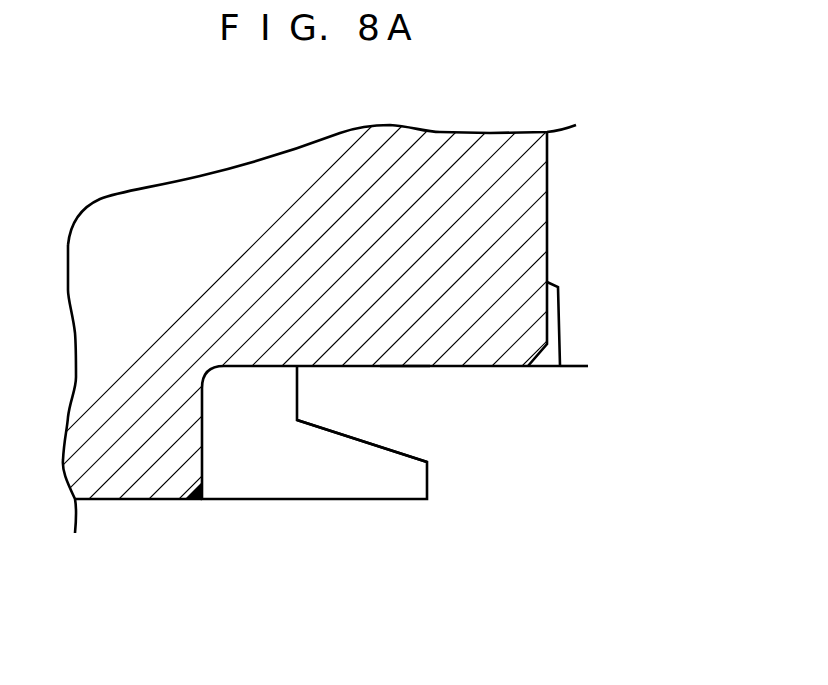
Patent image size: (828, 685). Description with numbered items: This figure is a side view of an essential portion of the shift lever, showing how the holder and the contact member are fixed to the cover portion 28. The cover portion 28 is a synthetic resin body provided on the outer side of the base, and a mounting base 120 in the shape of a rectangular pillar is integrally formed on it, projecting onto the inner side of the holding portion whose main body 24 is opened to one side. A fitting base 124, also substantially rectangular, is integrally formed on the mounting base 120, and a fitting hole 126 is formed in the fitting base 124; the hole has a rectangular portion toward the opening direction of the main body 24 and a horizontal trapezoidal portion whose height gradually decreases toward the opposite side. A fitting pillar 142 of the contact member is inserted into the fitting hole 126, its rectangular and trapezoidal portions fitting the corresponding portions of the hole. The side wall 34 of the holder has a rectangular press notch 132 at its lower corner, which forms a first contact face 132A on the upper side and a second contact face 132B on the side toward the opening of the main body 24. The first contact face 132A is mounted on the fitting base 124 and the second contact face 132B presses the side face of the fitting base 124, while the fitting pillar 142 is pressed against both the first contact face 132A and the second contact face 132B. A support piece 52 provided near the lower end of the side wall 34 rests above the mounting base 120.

The side wall 34 is at (548, 150).
The main body 24 is at (542, 214).
The cover portion 28 is at (574, 367).
The press notch 132 is at (522, 367).
The first contact face 132A is at (474, 367).
The second contact face 132B is at (203, 468).
The fitting base 124 is at (394, 358).
The fitting hole 126 is at (344, 439).
The fitting pillar 142 is at (310, 465).
The mounting base 120 is at (140, 493).
The support piece 52 is at (93, 502).